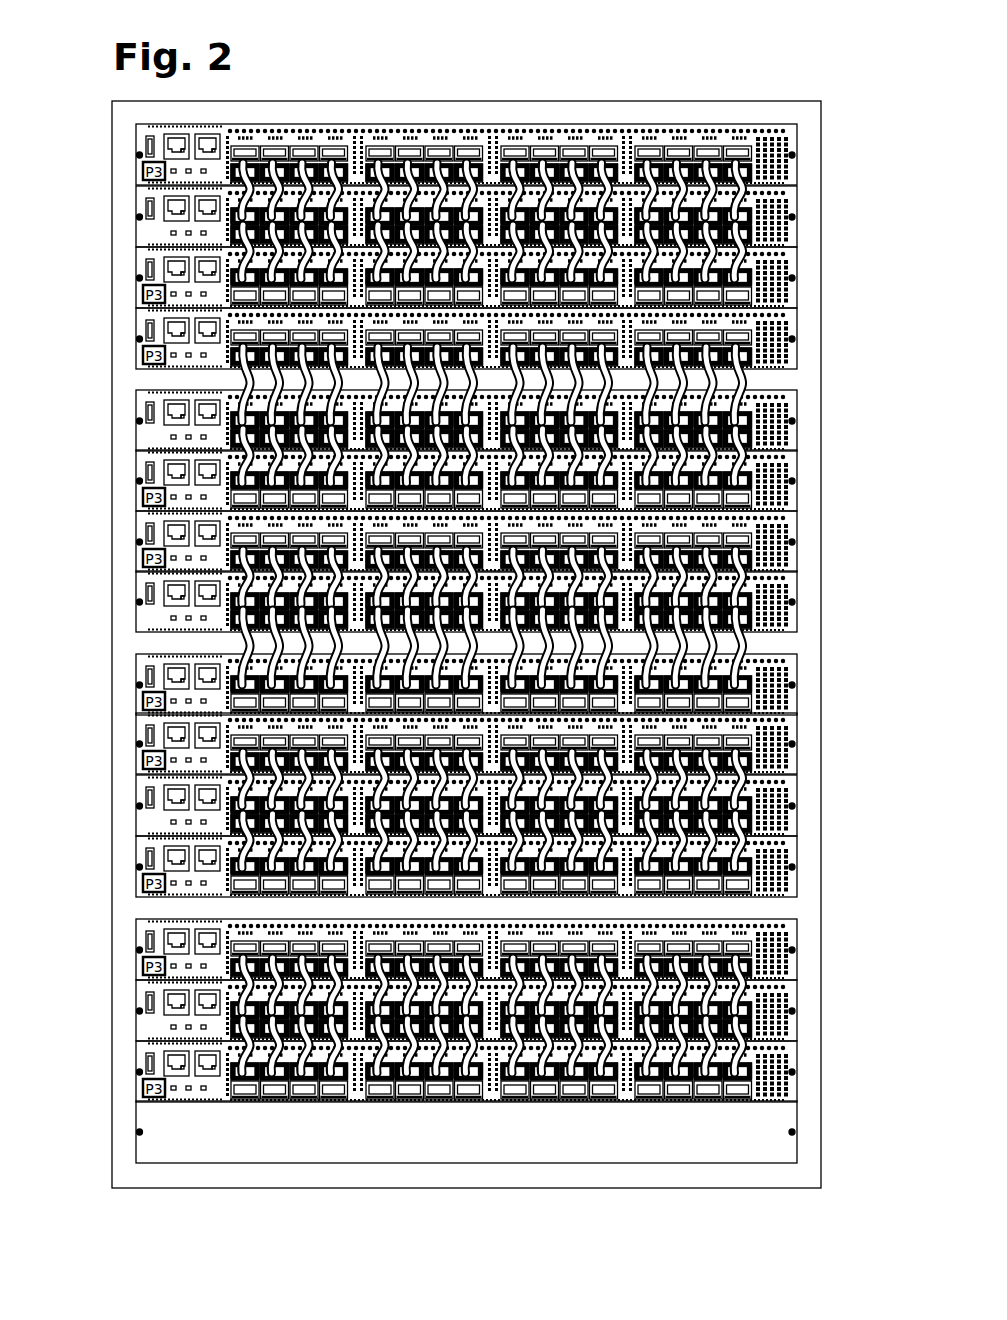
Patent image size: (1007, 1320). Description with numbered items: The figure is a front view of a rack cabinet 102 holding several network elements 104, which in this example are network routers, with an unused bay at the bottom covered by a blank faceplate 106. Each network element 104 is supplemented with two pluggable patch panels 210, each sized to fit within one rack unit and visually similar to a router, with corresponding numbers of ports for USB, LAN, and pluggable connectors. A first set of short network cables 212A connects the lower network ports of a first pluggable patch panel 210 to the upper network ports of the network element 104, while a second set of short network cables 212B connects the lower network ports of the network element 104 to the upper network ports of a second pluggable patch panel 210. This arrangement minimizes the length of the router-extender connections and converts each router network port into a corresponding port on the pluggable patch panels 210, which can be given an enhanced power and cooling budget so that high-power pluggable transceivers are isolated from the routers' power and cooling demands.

The rack cabinet 102 is at (553, 93).
The network element 104 is at (789, 972).
The blank faceplate 106 is at (553, 1153).
The pluggable patch panel 210 is at (128, 135).
The first set of short network cables 212A is at (390, 591).
The second set of short network cables 212B is at (390, 652).